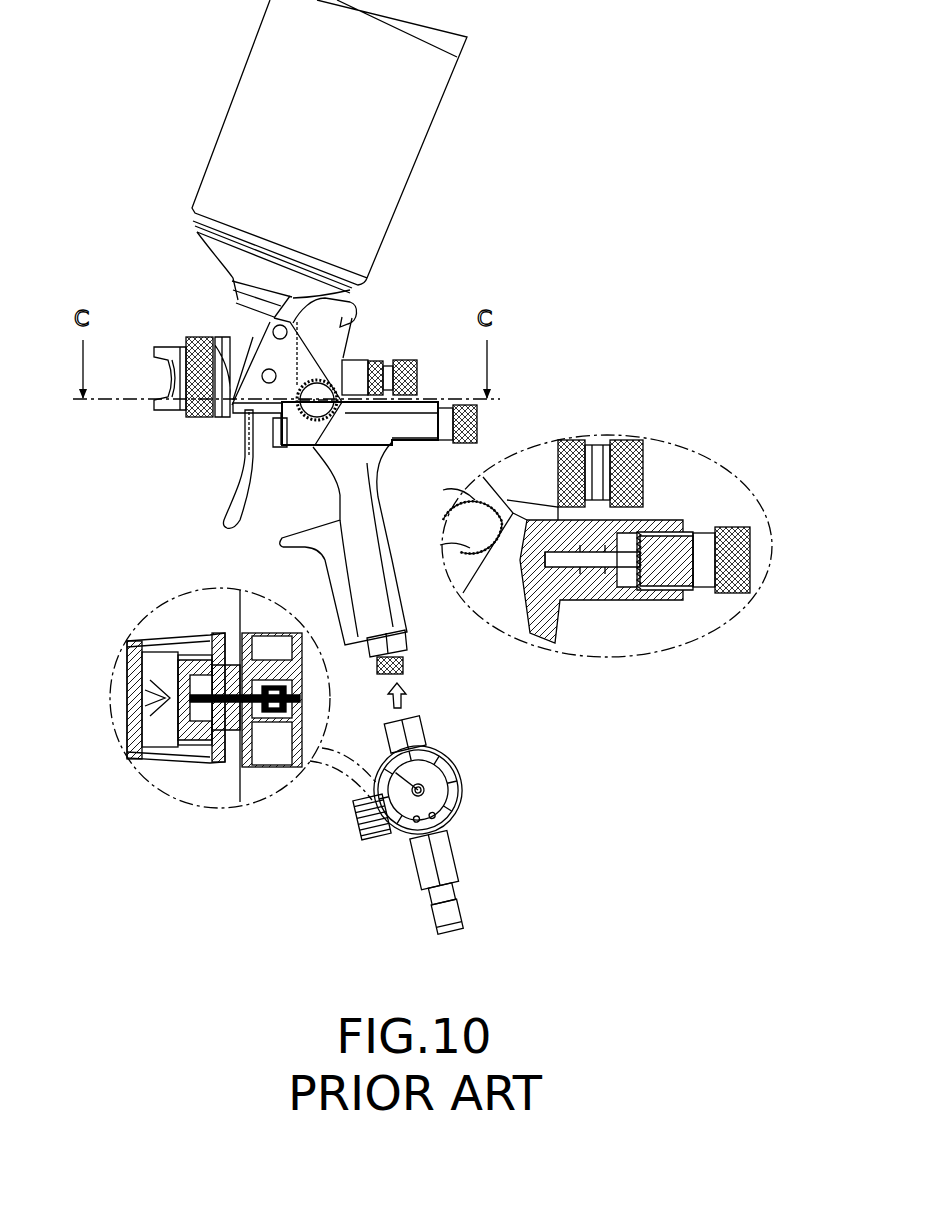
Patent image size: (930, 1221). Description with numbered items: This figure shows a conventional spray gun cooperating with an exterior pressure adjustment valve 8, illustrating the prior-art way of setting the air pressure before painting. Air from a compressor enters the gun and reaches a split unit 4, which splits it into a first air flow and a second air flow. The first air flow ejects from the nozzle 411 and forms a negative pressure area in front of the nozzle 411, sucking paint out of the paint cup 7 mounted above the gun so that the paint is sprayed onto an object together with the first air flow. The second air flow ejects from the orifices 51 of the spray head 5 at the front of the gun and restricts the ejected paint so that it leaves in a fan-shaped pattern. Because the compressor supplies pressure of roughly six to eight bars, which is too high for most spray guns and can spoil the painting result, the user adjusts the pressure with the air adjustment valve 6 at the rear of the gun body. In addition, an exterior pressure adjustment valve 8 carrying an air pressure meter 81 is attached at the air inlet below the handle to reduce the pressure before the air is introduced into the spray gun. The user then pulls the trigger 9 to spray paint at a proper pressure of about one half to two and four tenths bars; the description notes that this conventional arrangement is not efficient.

The paint cup 7 is at (326, 150).
The spray head 5 is at (168, 342).
The orifices 51 is at (150, 347).
The nozzle 411 is at (172, 377).
The split unit 4 is at (333, 377).
The air adjustment valve 6 is at (480, 422).
The trigger 9 is at (245, 483).
The exterior pressure adjustment valve 8 is at (156, 630).
The air pressure meter 81 is at (437, 748).